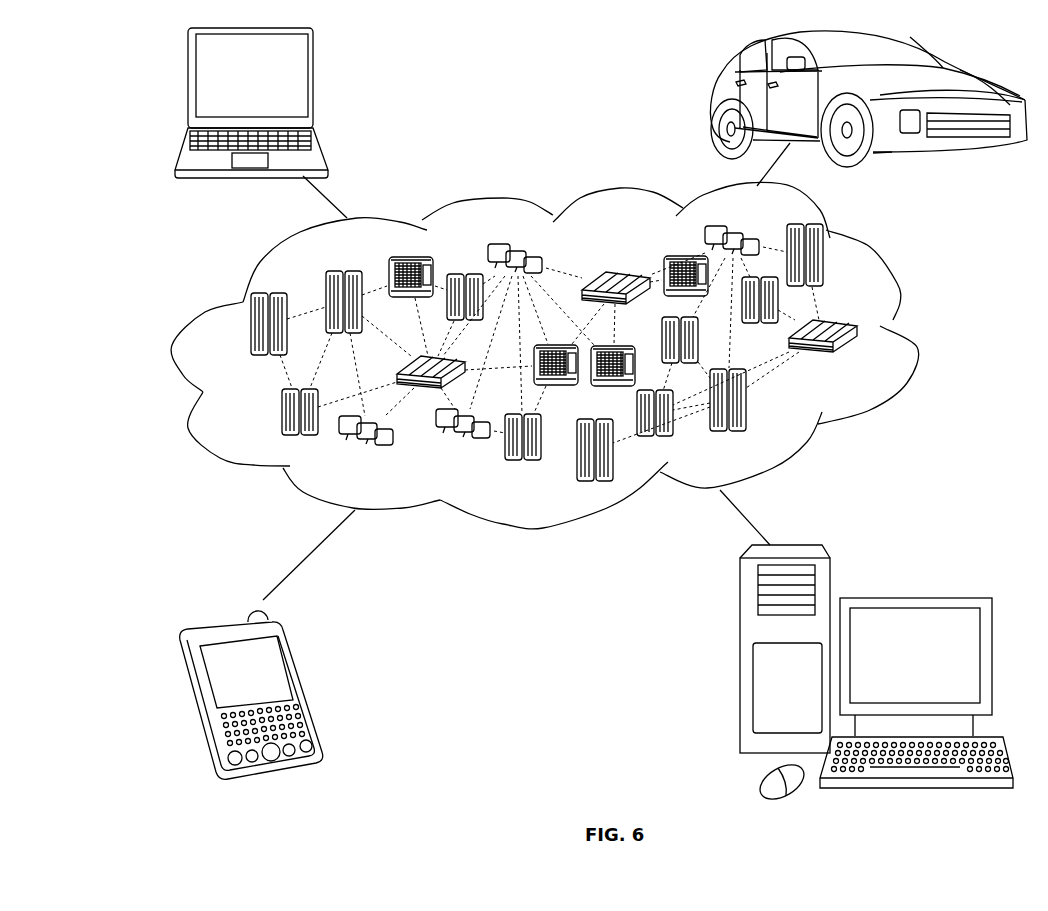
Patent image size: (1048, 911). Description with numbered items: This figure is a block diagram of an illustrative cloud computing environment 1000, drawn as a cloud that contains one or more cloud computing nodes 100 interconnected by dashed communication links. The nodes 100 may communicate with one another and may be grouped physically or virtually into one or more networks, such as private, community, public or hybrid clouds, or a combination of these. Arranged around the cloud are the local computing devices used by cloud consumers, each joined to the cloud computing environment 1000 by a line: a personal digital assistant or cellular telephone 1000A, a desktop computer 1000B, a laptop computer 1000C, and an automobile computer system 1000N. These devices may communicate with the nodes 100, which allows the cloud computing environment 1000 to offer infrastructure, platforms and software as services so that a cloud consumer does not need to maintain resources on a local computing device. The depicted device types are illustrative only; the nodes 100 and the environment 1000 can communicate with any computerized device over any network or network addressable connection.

The cloud computing nodes 100 is at (860, 360).
The cloud computing environment 1000 is at (580, 355).
The personal digital assistant (PDA) or cellular telephone 1000A is at (307, 683).
The desktop computer 1000B is at (912, 597).
The laptop computer 1000C is at (313, 82).
The automobile computer system 1000N is at (711, 98).